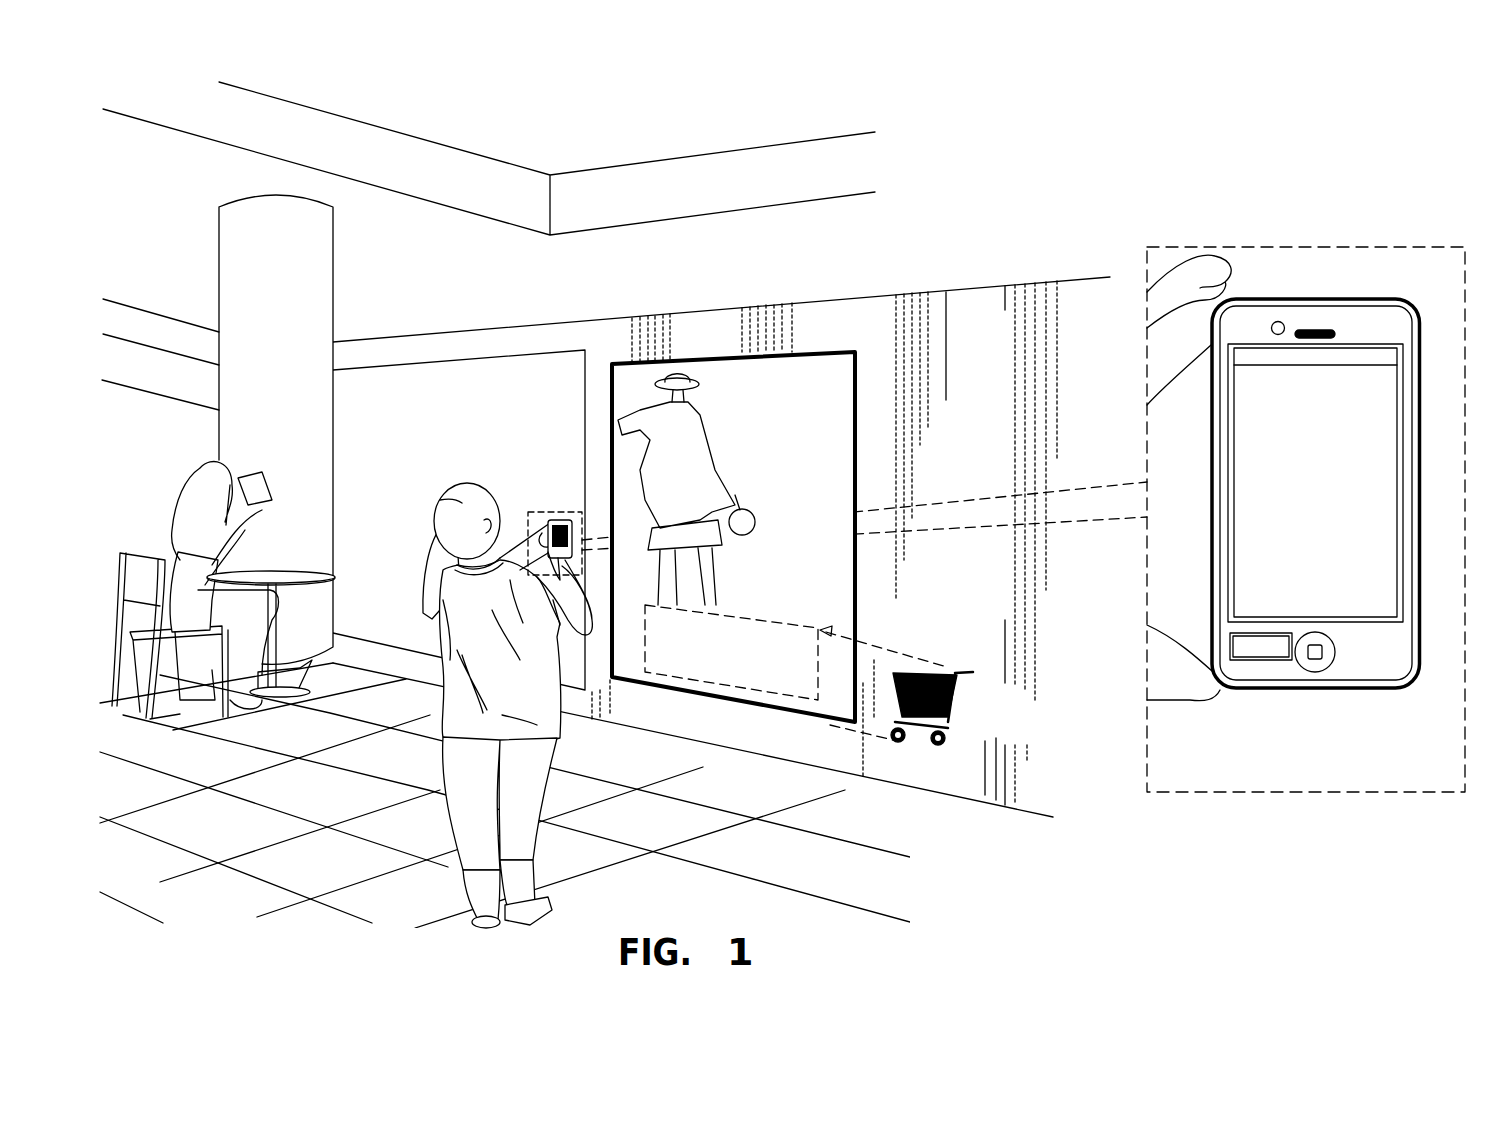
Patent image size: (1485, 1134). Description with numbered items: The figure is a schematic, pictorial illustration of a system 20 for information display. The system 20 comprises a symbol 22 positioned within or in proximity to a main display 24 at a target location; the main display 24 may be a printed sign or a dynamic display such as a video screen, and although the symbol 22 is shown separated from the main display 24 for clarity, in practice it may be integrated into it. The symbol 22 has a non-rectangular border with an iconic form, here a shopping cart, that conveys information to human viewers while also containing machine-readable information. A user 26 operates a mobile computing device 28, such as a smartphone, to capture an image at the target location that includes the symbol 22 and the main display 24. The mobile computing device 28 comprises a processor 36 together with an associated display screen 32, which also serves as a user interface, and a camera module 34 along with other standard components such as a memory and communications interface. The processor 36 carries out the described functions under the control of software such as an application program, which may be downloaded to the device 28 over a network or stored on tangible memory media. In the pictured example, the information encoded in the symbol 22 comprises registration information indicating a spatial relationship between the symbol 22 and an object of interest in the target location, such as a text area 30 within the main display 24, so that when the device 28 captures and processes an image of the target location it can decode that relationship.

The system 20 is at (288, 322).
The symbol 22 is at (958, 698).
The main display 24 is at (784, 524).
The user 26 is at (456, 514).
The mobile computing device 28 is at (567, 520).
The text area 30 is at (782, 625).
The display screen 32 is at (1382, 580).
The camera module 34 is at (1280, 321).
The processor 36 is at (1258, 661).